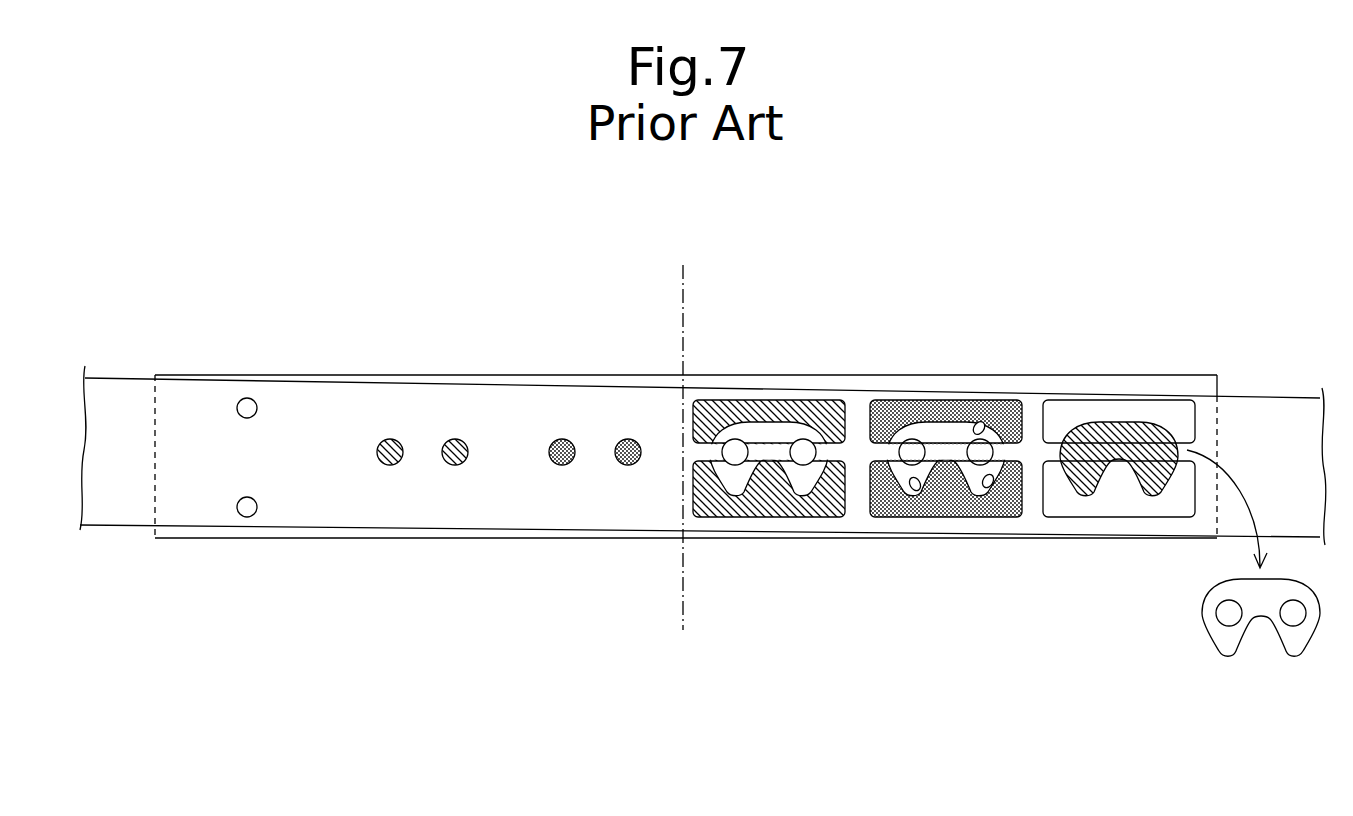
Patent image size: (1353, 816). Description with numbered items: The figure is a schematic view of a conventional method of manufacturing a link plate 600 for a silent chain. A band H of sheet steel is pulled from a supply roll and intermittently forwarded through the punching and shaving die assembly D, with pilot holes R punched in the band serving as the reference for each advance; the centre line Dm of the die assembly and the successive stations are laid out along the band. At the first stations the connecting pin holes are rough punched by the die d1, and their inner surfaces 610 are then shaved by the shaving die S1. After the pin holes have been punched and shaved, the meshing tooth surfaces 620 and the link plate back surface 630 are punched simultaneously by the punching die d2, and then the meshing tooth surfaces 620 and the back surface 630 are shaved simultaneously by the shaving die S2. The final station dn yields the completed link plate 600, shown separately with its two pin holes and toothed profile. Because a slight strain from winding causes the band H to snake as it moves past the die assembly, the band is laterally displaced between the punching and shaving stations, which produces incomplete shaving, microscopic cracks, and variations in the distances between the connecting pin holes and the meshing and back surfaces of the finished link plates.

The band H is at (117, 541).
The punching and shaving die assembly D is at (196, 553).
The center line of die Dm is at (684, 428).
The pilot holes R is at (247, 398).
The first pitch holes punched d1 is at (455, 439).
The first station slugs S1 is at (628, 439).
The punching die d2 is at (757, 402).
The inner surfaces 610 is at (805, 439).
The shaving die S2 is at (974, 405).
The link plate back surface 630 is at (982, 422).
The meshing tooth surfaces 620 is at (909, 492).
The final punched link plate dn is at (1122, 423).
The link plate 600 is at (1194, 641).